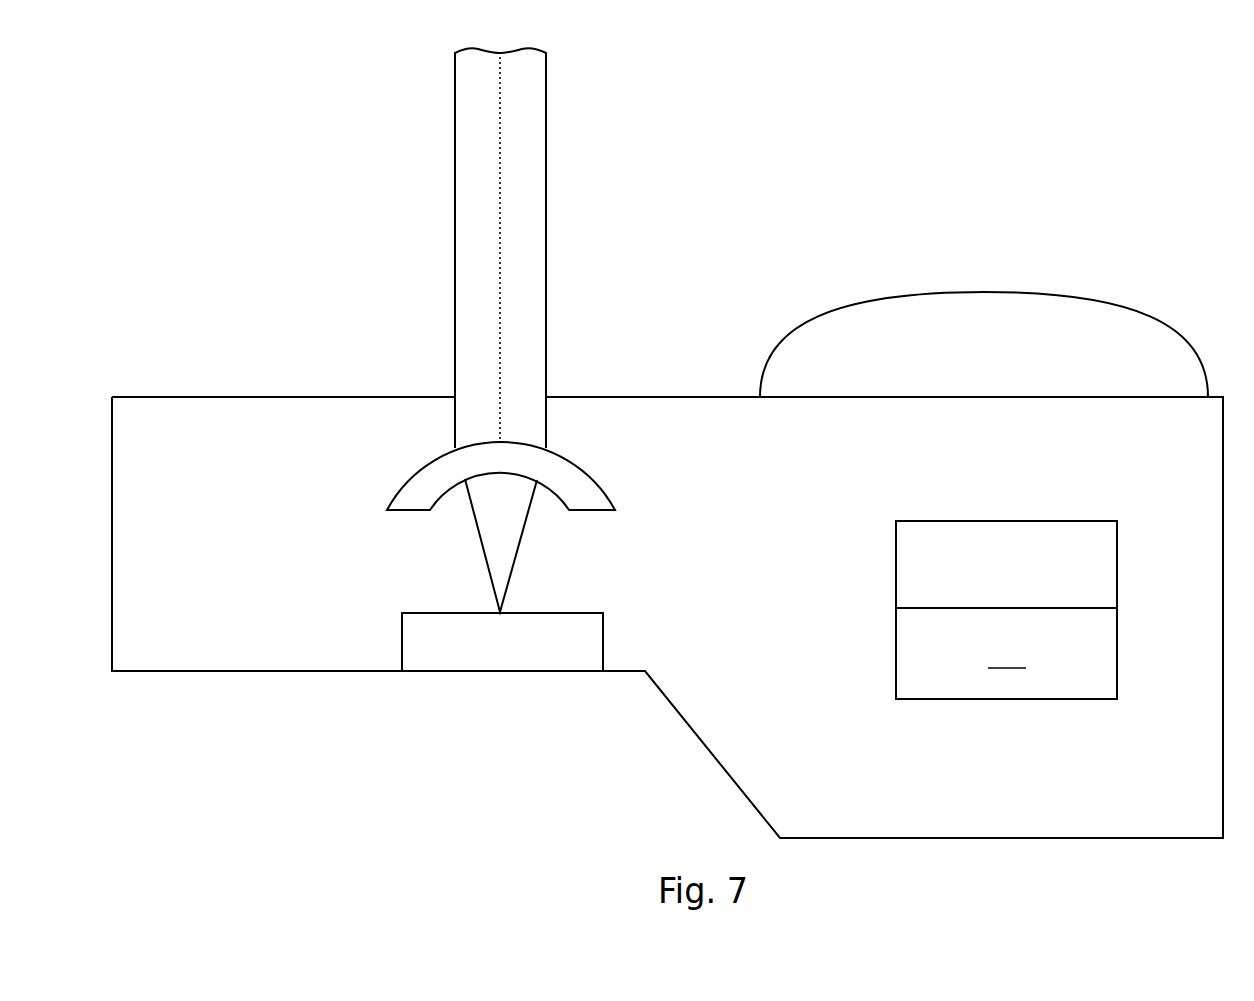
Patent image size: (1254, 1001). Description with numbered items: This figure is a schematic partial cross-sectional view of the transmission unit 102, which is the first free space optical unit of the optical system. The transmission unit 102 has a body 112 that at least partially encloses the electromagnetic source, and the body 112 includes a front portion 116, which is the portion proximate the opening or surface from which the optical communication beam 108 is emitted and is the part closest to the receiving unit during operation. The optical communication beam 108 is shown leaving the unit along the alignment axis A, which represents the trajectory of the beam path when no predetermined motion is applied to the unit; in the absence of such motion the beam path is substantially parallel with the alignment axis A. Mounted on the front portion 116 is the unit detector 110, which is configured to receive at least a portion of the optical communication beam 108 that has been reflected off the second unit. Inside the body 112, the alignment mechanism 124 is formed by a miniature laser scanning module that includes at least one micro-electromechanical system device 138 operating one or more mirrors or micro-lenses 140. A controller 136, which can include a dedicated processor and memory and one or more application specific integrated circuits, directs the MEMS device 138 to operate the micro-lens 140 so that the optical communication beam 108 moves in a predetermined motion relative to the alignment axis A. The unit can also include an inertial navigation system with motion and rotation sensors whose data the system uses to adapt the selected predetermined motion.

The transmission unit 102 is at (667, 501).
The front portion 116 is at (667, 594).
The body 112 is at (293, 397).
The optical communication beam 108 is at (566, 248).
The alignment axis A is at (500, 231).
The unit detector 110 is at (999, 358).
The alignment mechanism 124 is at (372, 566).
The micro-electromechanical system (MEMS) device 138 is at (502, 642).
The micro-lens 140 is at (459, 654).
The controller 136 is at (988, 578).